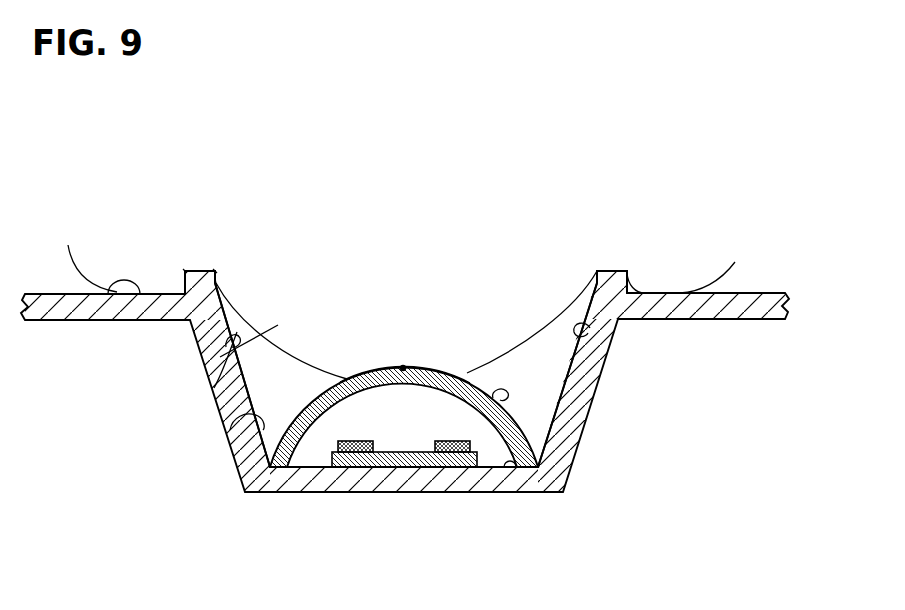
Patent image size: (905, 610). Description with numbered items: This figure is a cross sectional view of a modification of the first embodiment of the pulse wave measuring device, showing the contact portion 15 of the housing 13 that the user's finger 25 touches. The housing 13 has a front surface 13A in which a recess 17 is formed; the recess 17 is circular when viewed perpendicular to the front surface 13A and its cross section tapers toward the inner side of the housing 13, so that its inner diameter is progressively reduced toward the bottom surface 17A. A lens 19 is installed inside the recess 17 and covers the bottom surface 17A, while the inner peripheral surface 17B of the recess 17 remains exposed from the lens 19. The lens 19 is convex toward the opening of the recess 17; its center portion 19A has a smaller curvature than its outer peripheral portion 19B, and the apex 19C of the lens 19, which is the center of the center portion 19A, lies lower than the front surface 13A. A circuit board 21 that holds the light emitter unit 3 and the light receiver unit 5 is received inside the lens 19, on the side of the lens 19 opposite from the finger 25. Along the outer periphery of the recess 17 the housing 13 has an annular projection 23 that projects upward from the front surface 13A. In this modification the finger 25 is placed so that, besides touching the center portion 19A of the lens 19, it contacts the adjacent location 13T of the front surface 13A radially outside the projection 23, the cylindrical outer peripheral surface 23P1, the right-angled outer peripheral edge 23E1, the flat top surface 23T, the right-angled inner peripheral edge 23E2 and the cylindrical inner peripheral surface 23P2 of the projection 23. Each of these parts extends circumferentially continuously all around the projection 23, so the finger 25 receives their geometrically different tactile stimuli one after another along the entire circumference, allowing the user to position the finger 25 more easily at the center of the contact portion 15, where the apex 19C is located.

The light emitter unit 3 is at (358, 441).
The light receiver unit 5 is at (452, 441).
The housing 13 is at (690, 307).
The front surface 13A is at (739, 293).
The adjacent location 13T is at (108, 294).
The contact portion 15 is at (427, 492).
The recess 17 is at (568, 393).
The bottom surface 17A is at (510, 472).
The inner peripheral surface 17B is at (226, 346).
The lens 19 is at (317, 387).
The center portion 19A is at (368, 368).
The outer peripheral portion 19B is at (230, 430).
The apex 19C is at (403, 367).
The circuit board 21 is at (403, 452).
The projection 23 is at (203, 282).
The top surface 23T is at (205, 271).
The outer peripheral edge 23E1 is at (185, 272).
The inner peripheral edge 23E2 is at (215, 271).
The outer peripheral surface 23P1 is at (183, 282).
The inner peripheral surface 23P2 is at (217, 283).
The finger 25 is at (215, 387).